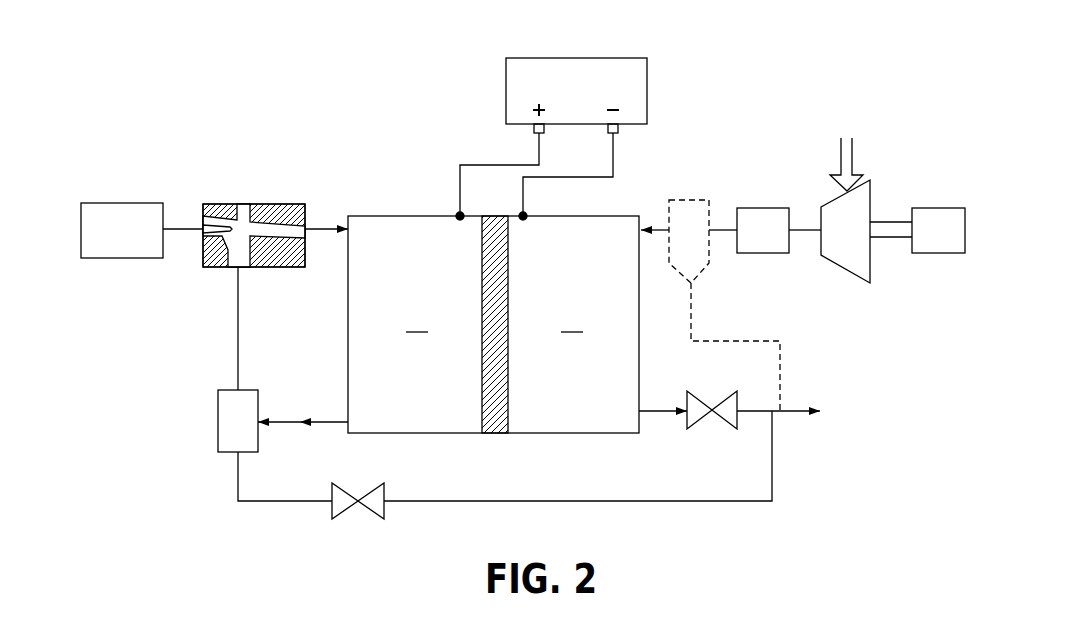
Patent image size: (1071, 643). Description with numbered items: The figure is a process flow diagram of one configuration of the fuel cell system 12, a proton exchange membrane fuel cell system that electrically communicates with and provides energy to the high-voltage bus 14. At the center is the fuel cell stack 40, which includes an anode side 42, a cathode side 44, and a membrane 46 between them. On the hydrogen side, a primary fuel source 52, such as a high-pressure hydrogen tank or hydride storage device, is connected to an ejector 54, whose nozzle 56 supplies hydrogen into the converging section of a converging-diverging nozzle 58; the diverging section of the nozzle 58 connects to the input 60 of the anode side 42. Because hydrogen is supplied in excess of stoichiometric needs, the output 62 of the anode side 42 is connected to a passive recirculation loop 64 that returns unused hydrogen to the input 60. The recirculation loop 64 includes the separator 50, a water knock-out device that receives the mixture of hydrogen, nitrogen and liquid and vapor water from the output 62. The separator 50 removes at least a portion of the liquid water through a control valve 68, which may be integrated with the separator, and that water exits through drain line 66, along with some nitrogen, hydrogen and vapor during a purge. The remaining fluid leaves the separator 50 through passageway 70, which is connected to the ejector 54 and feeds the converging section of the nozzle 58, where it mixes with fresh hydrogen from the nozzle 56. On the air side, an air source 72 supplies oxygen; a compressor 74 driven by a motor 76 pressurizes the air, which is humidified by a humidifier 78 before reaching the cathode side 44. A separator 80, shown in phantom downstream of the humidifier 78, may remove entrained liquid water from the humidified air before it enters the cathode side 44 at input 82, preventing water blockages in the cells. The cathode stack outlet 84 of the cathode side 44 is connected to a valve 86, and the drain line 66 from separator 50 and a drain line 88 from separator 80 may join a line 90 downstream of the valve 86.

The fuel cell system 12 is at (285, 120).
The high-voltage bus 14 is at (564, 99).
The fuel cell stack 40 is at (493, 307).
The anode side 42 is at (417, 320).
The cathode side 44 is at (572, 320).
The membrane 46 is at (492, 434).
The separator 50 is at (227, 433).
The primary fuel source 52 is at (153, 203).
The ejector 54 is at (239, 202).
The nozzle 56 is at (238, 214).
The converging-diverging nozzle 58 is at (244, 215).
The input 60 is at (347, 235).
The output 62 is at (347, 425).
The passive recirculation loop 64 is at (192, 391).
The drain line 66 is at (237, 489).
The control valve 68 is at (359, 512).
The passageway 70 is at (237, 338).
The air source 72 is at (852, 158).
The compressor 74 is at (832, 243).
The motor 76 is at (927, 243).
The humidifier 78 is at (752, 243).
The separator 80 is at (679, 248).
The input 82 is at (662, 228).
The cathode stack outlet 84 is at (660, 414).
The valve 86 is at (712, 402).
The drain line 88 is at (735, 341).
The line 90 is at (793, 410).